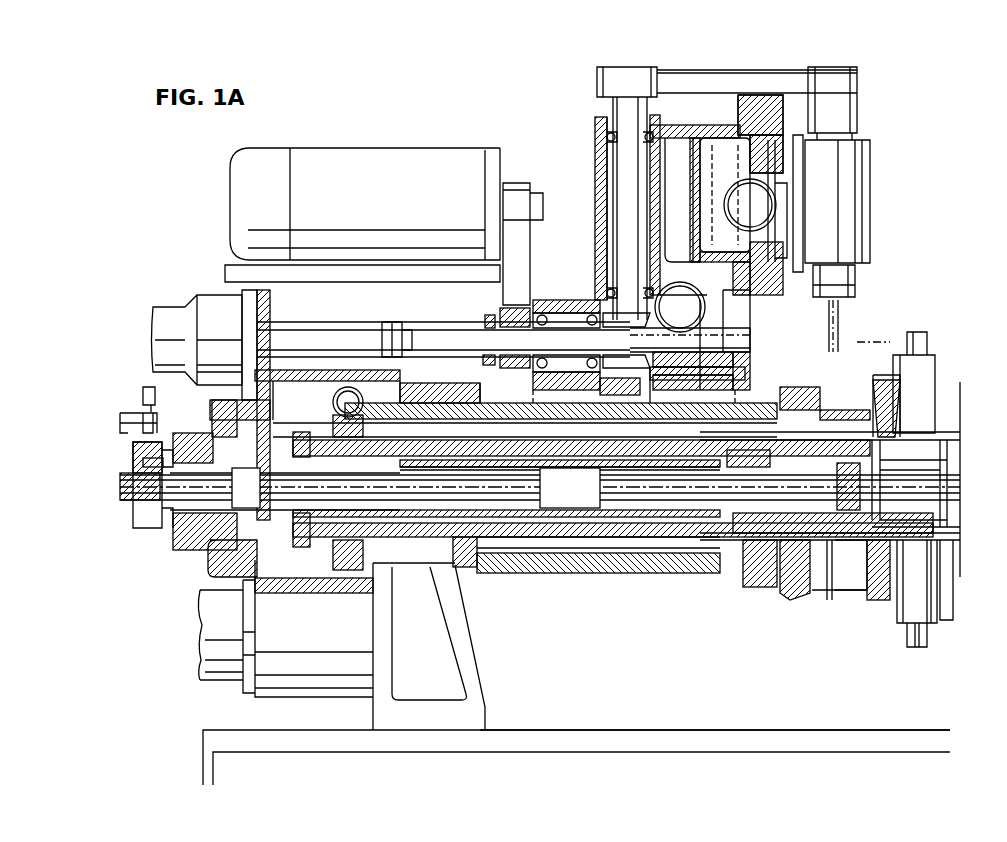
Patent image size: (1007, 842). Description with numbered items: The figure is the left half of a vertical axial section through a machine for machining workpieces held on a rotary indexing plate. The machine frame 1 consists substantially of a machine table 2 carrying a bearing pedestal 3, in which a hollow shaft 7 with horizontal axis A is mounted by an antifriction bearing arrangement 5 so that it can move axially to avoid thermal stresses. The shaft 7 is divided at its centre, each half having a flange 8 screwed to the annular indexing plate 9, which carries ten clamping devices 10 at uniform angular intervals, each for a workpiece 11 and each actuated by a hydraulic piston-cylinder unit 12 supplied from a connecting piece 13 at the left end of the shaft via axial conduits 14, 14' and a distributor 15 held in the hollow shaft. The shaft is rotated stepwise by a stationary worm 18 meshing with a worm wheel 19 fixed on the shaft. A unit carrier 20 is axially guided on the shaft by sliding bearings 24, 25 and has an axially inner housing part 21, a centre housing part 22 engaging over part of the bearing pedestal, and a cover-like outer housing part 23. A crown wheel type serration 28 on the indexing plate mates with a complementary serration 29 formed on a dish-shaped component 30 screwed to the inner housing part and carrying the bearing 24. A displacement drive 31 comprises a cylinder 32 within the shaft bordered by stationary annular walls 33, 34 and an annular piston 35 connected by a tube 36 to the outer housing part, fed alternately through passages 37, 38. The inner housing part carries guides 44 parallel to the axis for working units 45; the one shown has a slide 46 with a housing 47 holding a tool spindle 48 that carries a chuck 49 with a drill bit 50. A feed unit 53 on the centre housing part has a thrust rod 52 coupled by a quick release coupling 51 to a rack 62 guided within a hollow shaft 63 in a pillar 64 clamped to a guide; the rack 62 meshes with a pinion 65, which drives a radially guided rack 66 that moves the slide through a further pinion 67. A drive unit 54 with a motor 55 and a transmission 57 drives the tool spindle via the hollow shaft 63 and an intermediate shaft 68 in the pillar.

The machine frame 1 is at (186, 742).
The machine table 2 is at (663, 740).
The bearing pedestal 3 is at (473, 685).
The antifriction bearing arrangement 5 is at (408, 540).
The shaft 7 is at (548, 560).
The flange 8 is at (867, 553).
The indexing plate 9 is at (948, 603).
The clamping device 10 is at (922, 632).
The workpiece 11 is at (893, 318).
The hydraulic piston-cylinder unit 12 is at (907, 617).
The connecting piece 13 is at (150, 517).
The axial conduit 14 is at (865, 483).
The axial conduit 14' is at (943, 486).
The distributor 15 is at (930, 502).
The worm 18 is at (340, 403).
The worm wheel 19 is at (350, 552).
The unit carrier 20 is at (647, 595).
The axially inner housing part 21 is at (695, 563).
The centre housing part 22 is at (463, 582).
The outer housing part 23 is at (223, 553).
The sliding bearing 24 is at (788, 575).
The sliding bearing 25 is at (507, 560).
The crown wheel type serration 28 is at (877, 587).
The crown wheel type serration 29 is at (823, 575).
The dish-shaped component 30 is at (797, 600).
The displacement drive 31 is at (713, 550).
The cylinder 32 is at (675, 527).
The annular wall 33 is at (752, 540).
The annular wall 34 is at (598, 560).
The annular piston 35 is at (605, 525).
The tube 36 is at (287, 520).
The passage 37 is at (948, 443).
The passage 38 is at (945, 535).
The guide 44 is at (762, 395).
The working unit 45 is at (877, 165).
The slide 46 is at (778, 95).
The housing 47 is at (857, 205).
The tool spindle 48 is at (843, 128).
The chuck 49 is at (847, 287).
The drill bit 50 is at (828, 313).
The quick release coupling 51 is at (412, 323).
The thrust rod 52 is at (327, 330).
The feed unit 53 is at (183, 303).
The drive unit 54 is at (497, 133).
The motor 55 is at (396, 152).
The transmission 57 is at (540, 240).
The rack 62 is at (745, 340).
The hollow shaft 63 is at (570, 317).
The pillar 64 is at (595, 140).
The pinion 65 is at (680, 300).
The rack 66 is at (713, 153).
The pinion 67 is at (750, 185).
The intermediate shaft 68 is at (627, 228).
The axis A is at (155, 483).